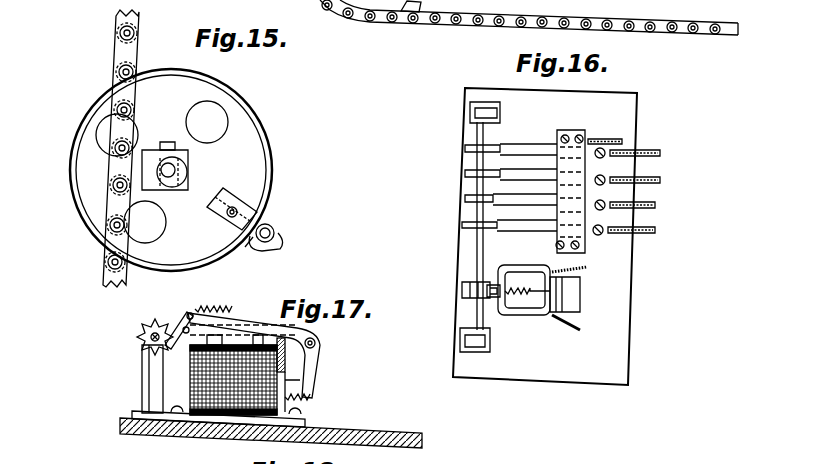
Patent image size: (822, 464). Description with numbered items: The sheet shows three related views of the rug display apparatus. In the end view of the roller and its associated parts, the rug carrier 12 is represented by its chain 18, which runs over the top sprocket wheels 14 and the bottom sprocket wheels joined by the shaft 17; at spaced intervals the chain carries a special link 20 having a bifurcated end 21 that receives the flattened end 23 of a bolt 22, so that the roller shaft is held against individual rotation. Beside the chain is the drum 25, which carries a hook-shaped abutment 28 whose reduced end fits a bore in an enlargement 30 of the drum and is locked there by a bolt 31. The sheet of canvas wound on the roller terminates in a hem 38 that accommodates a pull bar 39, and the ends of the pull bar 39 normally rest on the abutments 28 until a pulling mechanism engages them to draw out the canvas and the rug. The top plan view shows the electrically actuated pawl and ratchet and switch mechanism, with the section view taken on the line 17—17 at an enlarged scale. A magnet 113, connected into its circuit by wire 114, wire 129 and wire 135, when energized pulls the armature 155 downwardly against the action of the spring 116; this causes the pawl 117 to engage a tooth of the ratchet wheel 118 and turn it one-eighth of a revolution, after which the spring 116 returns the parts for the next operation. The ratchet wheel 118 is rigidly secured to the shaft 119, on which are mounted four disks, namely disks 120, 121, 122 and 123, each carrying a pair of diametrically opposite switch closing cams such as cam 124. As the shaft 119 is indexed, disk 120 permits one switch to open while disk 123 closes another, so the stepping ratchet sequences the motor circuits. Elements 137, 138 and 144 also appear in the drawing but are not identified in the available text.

In FIG. 15, the rug carrier 12 is at (178, 105).
In FIG. 15, the top sprocket wheels 14 is at (82, 110).
In FIG. 16, the shaft 17 is at (445, 315).
In FIG. 15, the chain 18 is at (103, 270).
In FIG. 16, the chain 18 is at (457, 205).
In FIG. 15, the special link 20 is at (135, 157).
In FIG. 15, the bifurcated end 21 is at (188, 157).
In FIG. 15, the bolt 22 is at (167, 150).
In FIG. 15, the flattened end 23 is at (183, 172).
In FIG. 15, the drum 25 is at (269, 157).
In FIG. 15, the hook-shaped abutment 28 is at (258, 243).
In FIG. 15, the enlargement 30 is at (212, 207).
In FIG. 15, the bolt 31 is at (223, 215).
In FIG. 15, the hem 38 is at (253, 237).
In FIG. 15, the pull bar 39 is at (273, 223).
In FIG. 16, the magnet 113 is at (527, 316).
In FIG. 17, the magnet 113 is at (230, 418).
In FIG. 16, the wire 114 is at (580, 331).
In FIG. 17, the spring 116 is at (297, 400).
In FIG. 17, the pawl 117 is at (188, 316).
In FIG. 17, the ratchet wheel 118 is at (143, 333).
In FIG. 16, the shaft 119 is at (477, 258).
In FIG. 17, the shaft 119 is at (152, 340).
In FIG. 16, the disk 120 is at (465, 228).
In FIG. 16, the disk 121 is at (468, 195).
In FIG. 16, the disk 122 is at (468, 168).
In FIG. 16, the disk 123 is at (468, 145).
In FIG. 17, the switch closing cam 124 is at (165, 463).
In FIG. 16, the wire 129 is at (660, 157).
In FIG. 16, the wire 135 is at (588, 268).
In FIG. 16, the resistor 137 is at (657, 203).
In FIG. 16, the resistor 138 is at (660, 183).
In FIG. 16, the resistor 144 is at (658, 233).
In FIG. 17, the armature 155 is at (242, 323).